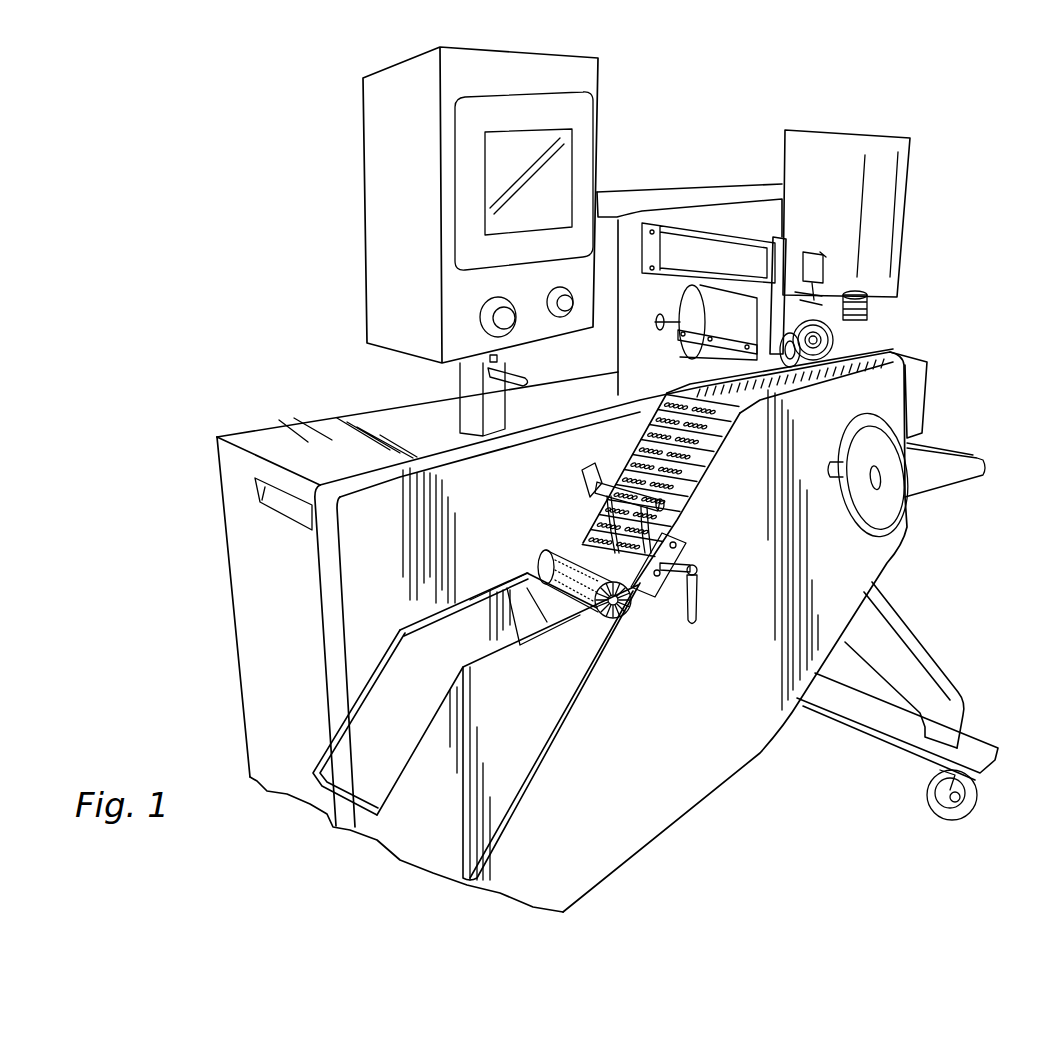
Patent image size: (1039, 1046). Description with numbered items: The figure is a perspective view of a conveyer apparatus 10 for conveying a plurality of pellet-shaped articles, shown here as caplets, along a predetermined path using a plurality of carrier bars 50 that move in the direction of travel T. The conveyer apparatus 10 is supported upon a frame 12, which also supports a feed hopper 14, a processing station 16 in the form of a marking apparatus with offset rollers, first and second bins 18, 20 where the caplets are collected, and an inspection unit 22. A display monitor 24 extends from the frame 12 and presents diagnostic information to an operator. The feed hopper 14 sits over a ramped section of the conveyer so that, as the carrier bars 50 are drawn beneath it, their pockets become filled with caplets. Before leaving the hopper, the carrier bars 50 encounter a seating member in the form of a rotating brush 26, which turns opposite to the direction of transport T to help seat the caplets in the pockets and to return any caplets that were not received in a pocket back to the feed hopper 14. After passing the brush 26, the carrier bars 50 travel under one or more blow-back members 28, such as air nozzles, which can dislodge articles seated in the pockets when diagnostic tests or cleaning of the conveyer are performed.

The conveyer apparatus 10 is at (736, 466).
The frame 12 is at (900, 657).
The feed hopper 14 is at (528, 722).
The processing station 16 is at (812, 385).
The first bin 18 is at (917, 395).
The second bin 20 is at (947, 475).
The inspection unit 22 is at (882, 300).
The display monitor 24 is at (553, 173).
The brush 26 is at (628, 615).
The blow-back member 28 is at (595, 532).
The carrier bar 50 is at (730, 468).
The direction of travel T is at (623, 446).